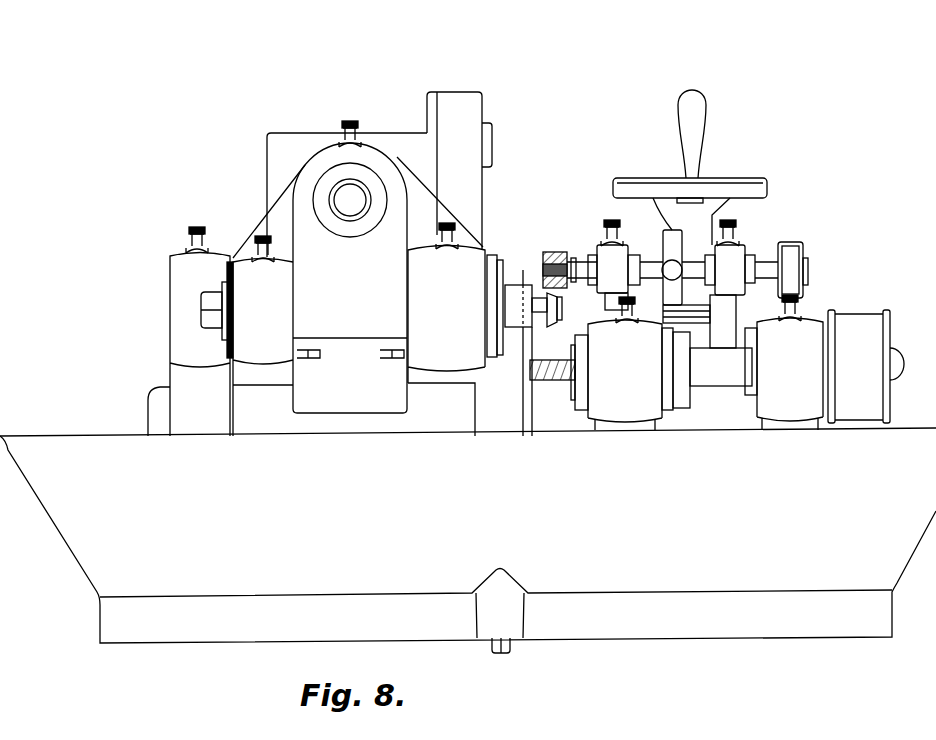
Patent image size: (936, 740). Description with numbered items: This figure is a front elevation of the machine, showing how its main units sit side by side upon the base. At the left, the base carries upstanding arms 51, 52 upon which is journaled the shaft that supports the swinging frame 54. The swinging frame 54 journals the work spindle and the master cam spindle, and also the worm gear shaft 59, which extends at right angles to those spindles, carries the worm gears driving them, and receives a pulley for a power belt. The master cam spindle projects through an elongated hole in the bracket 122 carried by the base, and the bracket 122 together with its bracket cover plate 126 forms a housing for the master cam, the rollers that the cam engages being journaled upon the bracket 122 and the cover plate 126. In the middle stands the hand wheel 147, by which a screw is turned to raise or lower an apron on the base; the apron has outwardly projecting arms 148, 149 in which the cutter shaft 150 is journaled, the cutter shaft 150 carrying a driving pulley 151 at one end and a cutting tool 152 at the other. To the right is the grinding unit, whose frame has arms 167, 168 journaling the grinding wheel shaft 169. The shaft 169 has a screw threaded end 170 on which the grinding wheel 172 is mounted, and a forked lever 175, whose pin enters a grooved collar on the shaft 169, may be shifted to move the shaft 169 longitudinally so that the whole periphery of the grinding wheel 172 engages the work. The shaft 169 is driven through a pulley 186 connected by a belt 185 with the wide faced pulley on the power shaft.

The upstanding arm 51 is at (180, 258).
The upstanding arm 52 is at (490, 247).
The swinging frame 54 is at (303, 145).
The worm gear shaft 59 is at (350, 212).
The bracket 122 is at (432, 100).
The bracket cover plate 126 is at (468, 118).
The hand wheel 147 is at (630, 185).
The outwardly projecting arm 148 is at (625, 409).
The outwardly projecting arm 149 is at (792, 410).
The cutter shaft 150 is at (738, 386).
The driving pulley 151 is at (858, 322).
The cutting tool 152 is at (545, 381).
The arm 167 is at (612, 255).
The arm 168 is at (735, 255).
The grinding wheel shaft 169 is at (585, 262).
The screw threaded end 170 is at (548, 270).
The grinding wheel 172 is at (552, 262).
The forked lever 175 is at (668, 270).
The belt 185 is at (790, 242).
The pulley 186 is at (806, 250).